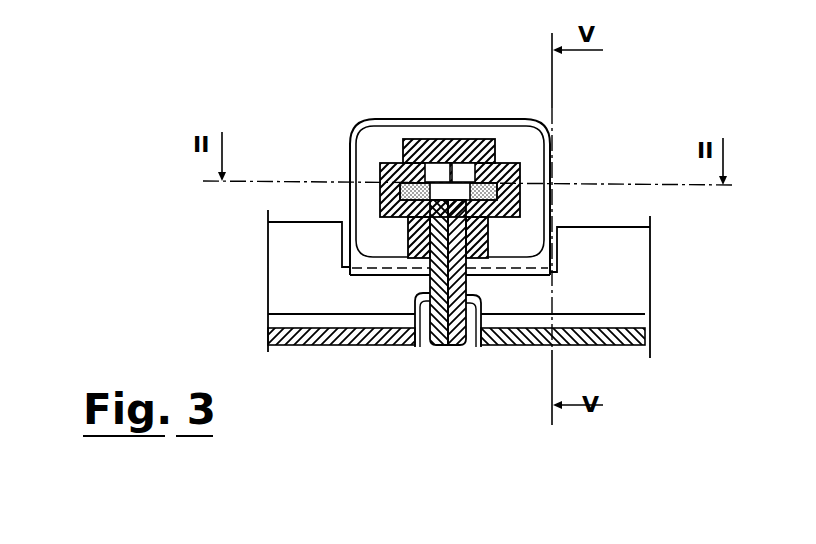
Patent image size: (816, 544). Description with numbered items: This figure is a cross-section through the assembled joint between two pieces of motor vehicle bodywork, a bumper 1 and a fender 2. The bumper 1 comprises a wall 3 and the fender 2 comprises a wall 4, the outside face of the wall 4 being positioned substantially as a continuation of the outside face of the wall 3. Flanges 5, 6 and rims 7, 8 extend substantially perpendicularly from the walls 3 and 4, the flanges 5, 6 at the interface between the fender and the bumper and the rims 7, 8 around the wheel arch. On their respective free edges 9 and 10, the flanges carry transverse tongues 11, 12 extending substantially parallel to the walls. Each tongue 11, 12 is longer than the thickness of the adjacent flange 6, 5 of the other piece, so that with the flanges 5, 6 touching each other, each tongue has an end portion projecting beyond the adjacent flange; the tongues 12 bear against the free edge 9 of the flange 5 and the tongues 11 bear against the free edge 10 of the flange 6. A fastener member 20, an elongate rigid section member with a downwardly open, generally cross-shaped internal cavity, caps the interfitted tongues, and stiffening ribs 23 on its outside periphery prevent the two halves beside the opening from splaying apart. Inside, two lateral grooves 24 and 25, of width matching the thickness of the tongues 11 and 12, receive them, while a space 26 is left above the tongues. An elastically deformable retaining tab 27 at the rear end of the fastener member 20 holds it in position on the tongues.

The bumper 1 is at (529, 380).
The fender 2 is at (355, 360).
The wall 3 is at (610, 348).
The wall 4 is at (292, 346).
The flange 5 is at (470, 300).
The flange 6 is at (414, 345).
The rim 7 is at (630, 297).
The rim 8 is at (293, 286).
The free edge 9 is at (490, 235).
The free edge 10 is at (410, 232).
The transverse tongue 11 is at (406, 166).
The transverse tongue 12 is at (521, 182).
The fastener member 20 is at (503, 112).
The stiffening ribs 23 is at (373, 147).
The lateral groove 24 is at (402, 190).
The lateral groove 25 is at (522, 198).
The space 26 is at (440, 172).
The retaining tab 27 is at (352, 258).